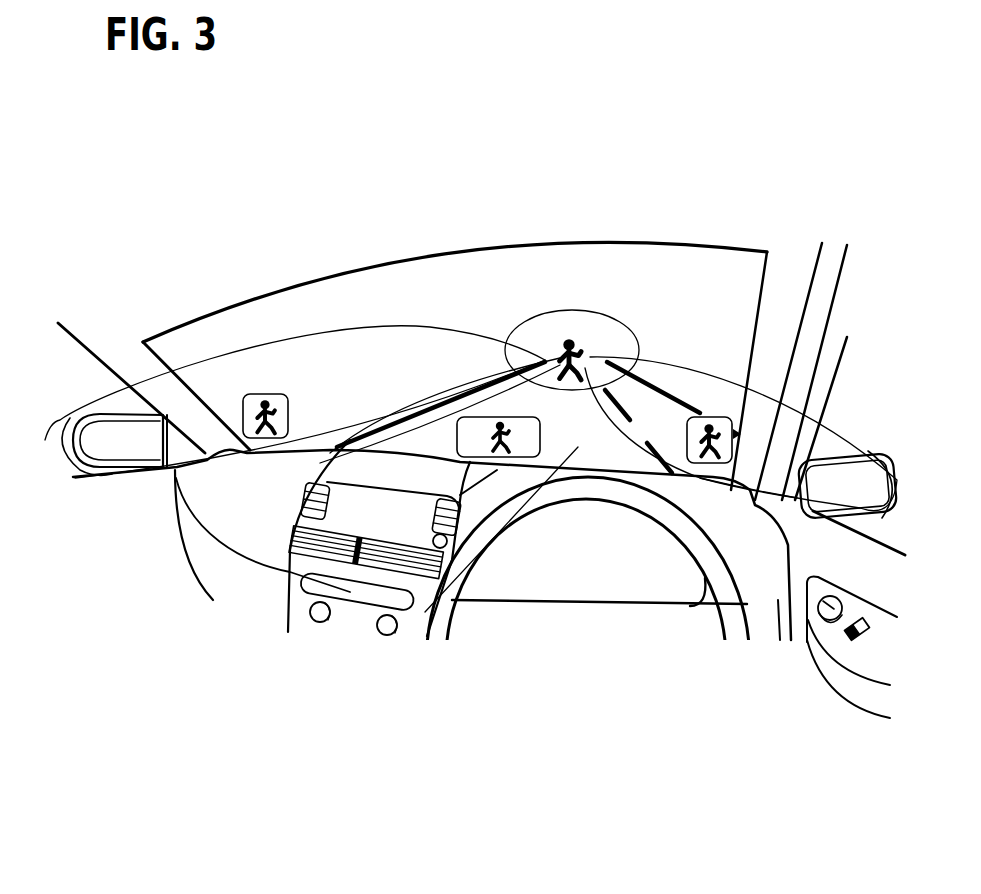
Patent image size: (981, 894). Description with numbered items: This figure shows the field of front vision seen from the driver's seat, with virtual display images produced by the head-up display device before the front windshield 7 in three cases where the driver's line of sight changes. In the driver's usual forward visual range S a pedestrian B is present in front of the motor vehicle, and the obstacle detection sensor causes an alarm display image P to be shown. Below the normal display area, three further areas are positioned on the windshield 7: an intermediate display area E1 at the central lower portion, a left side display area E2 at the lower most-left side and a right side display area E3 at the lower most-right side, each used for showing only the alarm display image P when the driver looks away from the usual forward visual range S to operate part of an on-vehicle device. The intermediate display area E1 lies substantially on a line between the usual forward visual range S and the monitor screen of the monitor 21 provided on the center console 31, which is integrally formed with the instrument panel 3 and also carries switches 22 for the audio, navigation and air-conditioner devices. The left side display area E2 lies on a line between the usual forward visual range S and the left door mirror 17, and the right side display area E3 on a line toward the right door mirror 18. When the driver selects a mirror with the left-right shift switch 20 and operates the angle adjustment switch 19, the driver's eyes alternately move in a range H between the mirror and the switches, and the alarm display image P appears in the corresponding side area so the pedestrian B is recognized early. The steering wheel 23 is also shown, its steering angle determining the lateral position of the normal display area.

The instrument panel 3 is at (288, 498).
The front windshield 7 is at (327, 300).
The left door mirror 17 is at (93, 437).
The right door mirror 18 is at (833, 470).
The angle adjustment switch 19 is at (818, 620).
The left-right shift switch 20 is at (866, 645).
The monitor 21 is at (303, 578).
The switches 22 is at (316, 618).
The steering wheel 23 is at (722, 632).
The center console 31 is at (350, 604).
The usual forward visual range S is at (531, 308).
The pedestrian B is at (584, 342).
The range H is at (418, 321).
The alarm display image P is at (262, 406).
The intermediate display area E1 is at (550, 444).
The left side display area E2 is at (246, 390).
The right side display area E3 is at (712, 414).